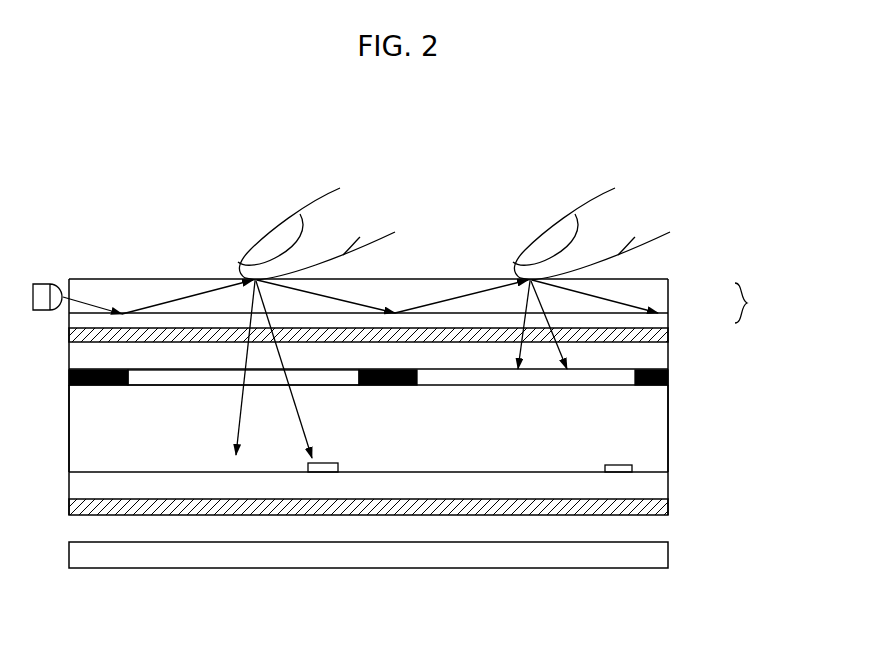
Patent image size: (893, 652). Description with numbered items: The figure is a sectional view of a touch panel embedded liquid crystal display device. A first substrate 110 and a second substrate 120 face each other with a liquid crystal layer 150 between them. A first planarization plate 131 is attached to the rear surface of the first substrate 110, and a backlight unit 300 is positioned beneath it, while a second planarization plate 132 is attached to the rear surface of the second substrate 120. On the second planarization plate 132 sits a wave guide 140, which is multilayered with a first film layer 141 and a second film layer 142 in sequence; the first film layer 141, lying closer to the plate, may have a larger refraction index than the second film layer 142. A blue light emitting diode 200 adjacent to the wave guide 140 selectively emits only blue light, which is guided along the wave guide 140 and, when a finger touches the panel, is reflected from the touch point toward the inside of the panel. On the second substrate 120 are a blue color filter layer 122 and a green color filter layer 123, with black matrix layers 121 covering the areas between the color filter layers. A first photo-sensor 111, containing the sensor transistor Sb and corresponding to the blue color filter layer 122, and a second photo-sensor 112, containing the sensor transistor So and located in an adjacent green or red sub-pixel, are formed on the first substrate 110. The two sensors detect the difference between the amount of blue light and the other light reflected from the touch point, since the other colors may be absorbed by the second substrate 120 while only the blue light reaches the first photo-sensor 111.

The blue light emitting diode 200 is at (39, 287).
The second film layer 142 is at (668, 291).
The first film layer 141 is at (668, 322).
The wave guide 140 is at (757, 303).
The second planarization plate 132 is at (668, 337).
The second substrate 120 is at (668, 358).
The liquid crystal layer 150 is at (668, 423).
The first substrate 110 is at (668, 484).
The first planarization plate 131 is at (668, 508).
The backlight unit 300 is at (668, 553).
The black matrix layer 121 is at (106, 386).
The blue color filter layer 122 is at (192, 383).
The green color filter layer 123 is at (475, 388).
The first photo-sensor 111 is at (325, 472).
The second photo-sensor 112 is at (618, 472).